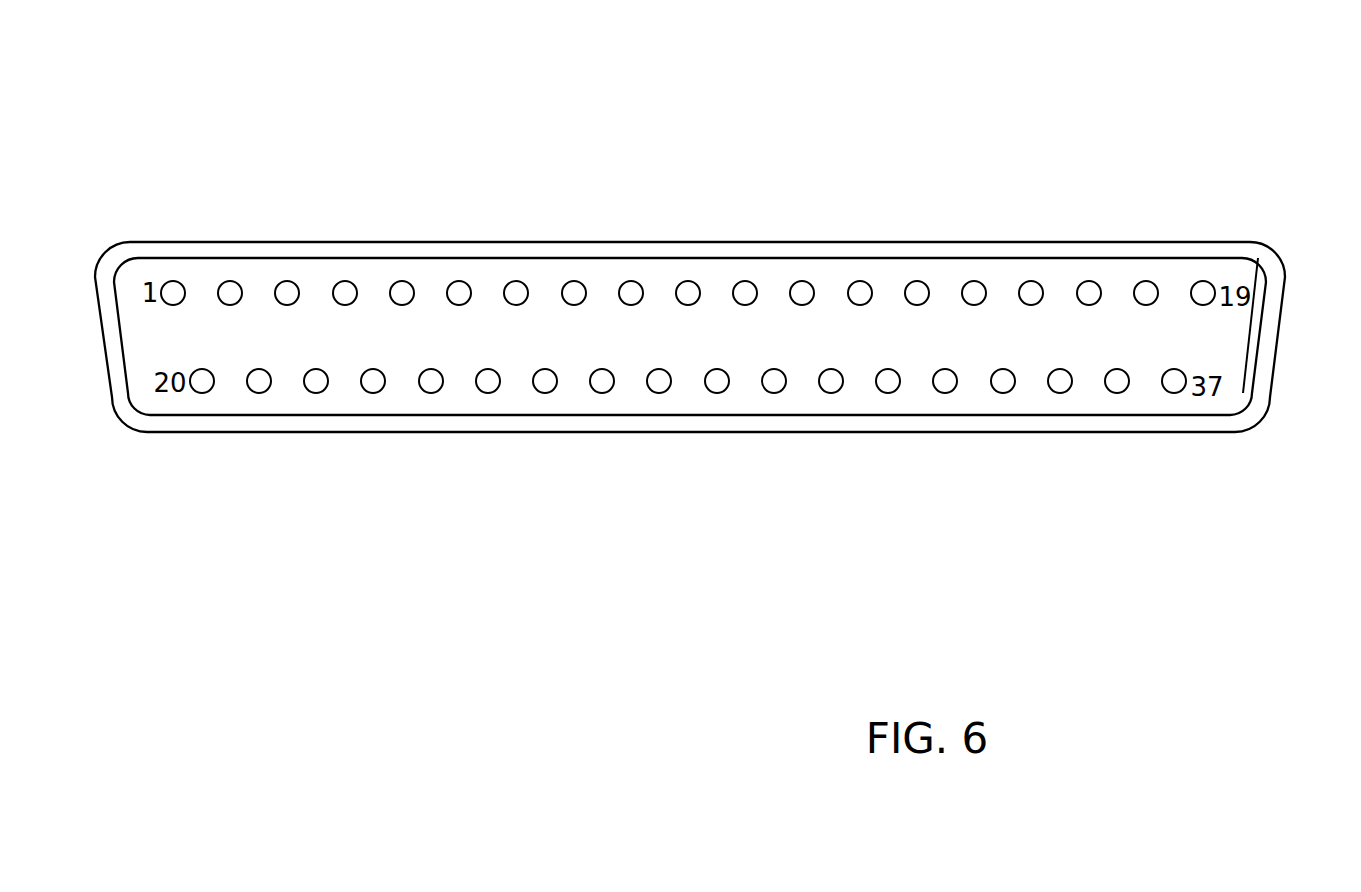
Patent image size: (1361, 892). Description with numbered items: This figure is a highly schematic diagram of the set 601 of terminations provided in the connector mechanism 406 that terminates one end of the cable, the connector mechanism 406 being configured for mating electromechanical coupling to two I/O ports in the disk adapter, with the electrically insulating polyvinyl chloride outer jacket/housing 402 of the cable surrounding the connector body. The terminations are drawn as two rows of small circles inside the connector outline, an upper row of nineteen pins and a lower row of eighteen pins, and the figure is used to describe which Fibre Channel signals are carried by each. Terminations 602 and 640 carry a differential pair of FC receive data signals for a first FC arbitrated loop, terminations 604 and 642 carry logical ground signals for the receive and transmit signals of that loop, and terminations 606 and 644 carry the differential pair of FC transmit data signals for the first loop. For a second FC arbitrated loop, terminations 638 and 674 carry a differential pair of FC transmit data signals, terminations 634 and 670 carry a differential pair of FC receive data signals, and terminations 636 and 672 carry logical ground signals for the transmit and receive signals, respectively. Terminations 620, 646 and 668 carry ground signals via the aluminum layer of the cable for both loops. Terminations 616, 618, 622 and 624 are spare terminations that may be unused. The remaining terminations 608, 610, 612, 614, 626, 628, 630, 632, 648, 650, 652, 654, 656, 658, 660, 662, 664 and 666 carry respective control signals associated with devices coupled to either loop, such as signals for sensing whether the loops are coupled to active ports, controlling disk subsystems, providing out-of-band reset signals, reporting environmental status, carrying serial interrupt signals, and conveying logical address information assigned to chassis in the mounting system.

The set of terminations 601 is at (141, 330).
The outer jacket/housing 402 is at (1275, 367).
The connector mechanism 406 is at (1268, 290).
The termination 602 is at (173, 281).
The termination 604 is at (230, 281).
The termination 606 is at (287, 281).
The termination 608 is at (345, 281).
The termination 610 is at (402, 281).
The termination 612 is at (459, 281).
The termination 614 is at (516, 281).
The termination 616 is at (574, 281).
The termination 618 is at (631, 281).
The termination 620 is at (688, 281).
The termination 622 is at (745, 281).
The termination 624 is at (802, 281).
The termination 626 is at (860, 281).
The termination 628 is at (917, 281).
The termination 630 is at (974, 281).
The termination 632 is at (1031, 281).
The termination 634 is at (1089, 281).
The termination 636 is at (1146, 281).
The termination 638 is at (1203, 281).
The termination 640 is at (202, 393).
The termination 642 is at (259, 393).
The termination 644 is at (316, 393).
The termination 646 is at (373, 393).
The termination 648 is at (431, 393).
The termination 650 is at (488, 393).
The termination 652 is at (545, 393).
The termination 654 is at (602, 393).
The termination 656 is at (659, 393).
The termination 658 is at (717, 393).
The termination 660 is at (774, 393).
The termination 662 is at (831, 393).
The termination 664 is at (888, 393).
The termination 666 is at (945, 393).
The termination 668 is at (1003, 393).
The termination 670 is at (1060, 393).
The termination 672 is at (1117, 393).
The termination 674 is at (1174, 393).